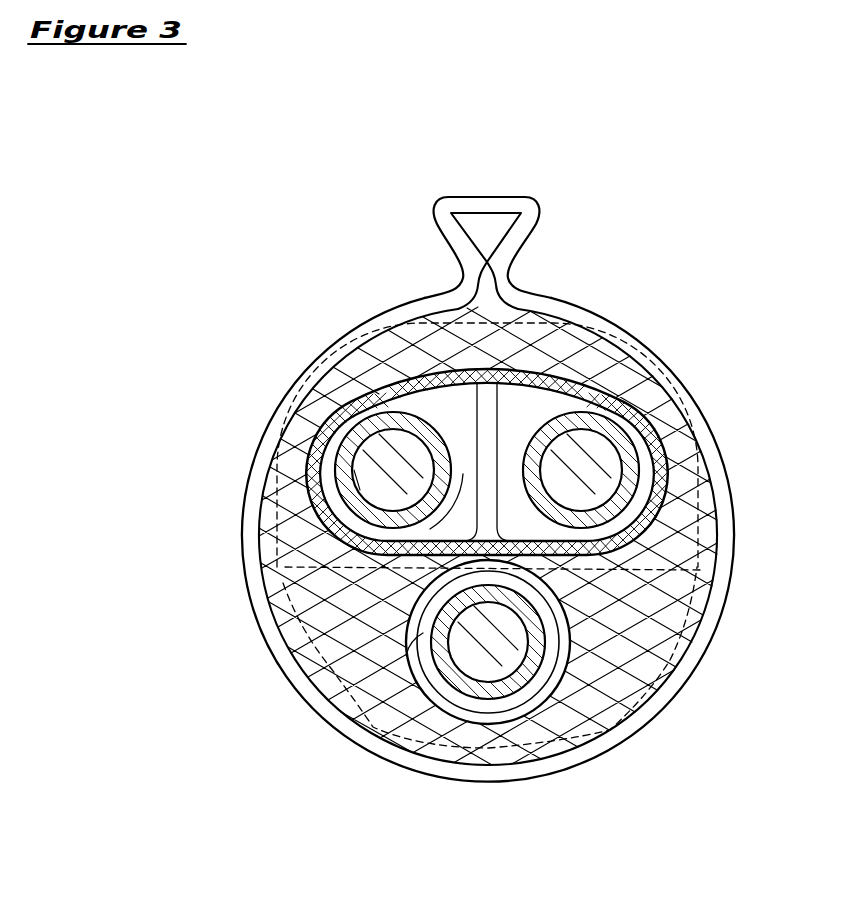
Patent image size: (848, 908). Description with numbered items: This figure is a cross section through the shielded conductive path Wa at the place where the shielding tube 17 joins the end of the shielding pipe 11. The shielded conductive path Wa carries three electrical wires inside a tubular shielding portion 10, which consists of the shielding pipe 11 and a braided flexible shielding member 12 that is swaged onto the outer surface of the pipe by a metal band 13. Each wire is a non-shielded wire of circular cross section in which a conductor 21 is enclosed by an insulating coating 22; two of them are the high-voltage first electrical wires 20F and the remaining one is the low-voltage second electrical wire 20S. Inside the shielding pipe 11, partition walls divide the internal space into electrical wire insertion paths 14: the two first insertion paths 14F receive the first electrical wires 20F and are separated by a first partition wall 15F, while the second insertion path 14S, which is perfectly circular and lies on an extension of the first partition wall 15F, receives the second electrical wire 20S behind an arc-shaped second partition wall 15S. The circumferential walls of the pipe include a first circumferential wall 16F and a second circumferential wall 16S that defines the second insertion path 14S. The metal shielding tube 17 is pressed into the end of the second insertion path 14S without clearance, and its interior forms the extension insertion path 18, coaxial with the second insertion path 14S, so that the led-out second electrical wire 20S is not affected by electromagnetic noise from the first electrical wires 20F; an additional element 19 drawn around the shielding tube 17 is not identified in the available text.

The shielded conductive path Wa is at (323, 100).
The shielding portion 10 is at (700, 253).
The shielding pipe 11 is at (580, 343).
The flexible shielding member 12 is at (613, 397).
The metal band 13 is at (706, 408).
The electrical wire insertion paths 14 is at (178, 655).
The first insertion paths 14F is at (517, 500).
The second insertion path 14S is at (423, 633).
The first partition wall 15F is at (482, 403).
The second partition wall 15S is at (700, 570).
The first region 16F is at (373, 364).
The second circumferential wall 16S is at (490, 750).
The shielding tube 17 is at (533, 702).
The extension insertion path 18 is at (430, 680).
The outer covering 19 is at (548, 687).
The first electrical wires 20F is at (405, 480).
The second electrical wire 20S is at (517, 648).
The conductor 21 is at (367, 466).
The insulating coating 22 is at (350, 500).